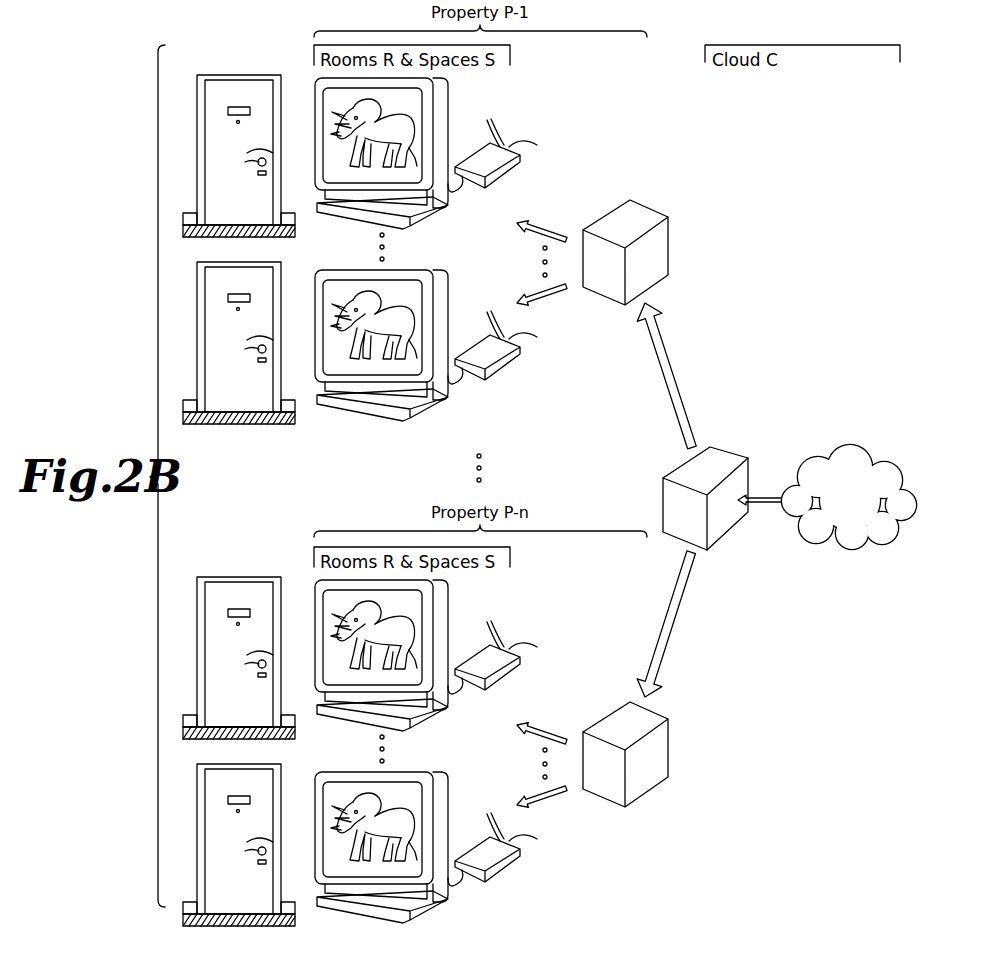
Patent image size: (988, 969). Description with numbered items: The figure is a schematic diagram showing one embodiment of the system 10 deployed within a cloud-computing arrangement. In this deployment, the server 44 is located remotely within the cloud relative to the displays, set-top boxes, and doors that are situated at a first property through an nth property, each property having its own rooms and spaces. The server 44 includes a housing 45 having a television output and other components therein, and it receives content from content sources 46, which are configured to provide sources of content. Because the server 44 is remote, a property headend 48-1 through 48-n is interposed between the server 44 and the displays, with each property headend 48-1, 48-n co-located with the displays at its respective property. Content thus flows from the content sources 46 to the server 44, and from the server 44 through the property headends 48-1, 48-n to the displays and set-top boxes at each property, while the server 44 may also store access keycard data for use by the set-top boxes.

The system 10 is at (150, 90).
The property headend 48-1 is at (627, 227).
The property headend 48-n is at (634, 774).
The server 44 is at (705, 471).
The housing 45 is at (727, 520).
The content sources 46 is at (858, 455).